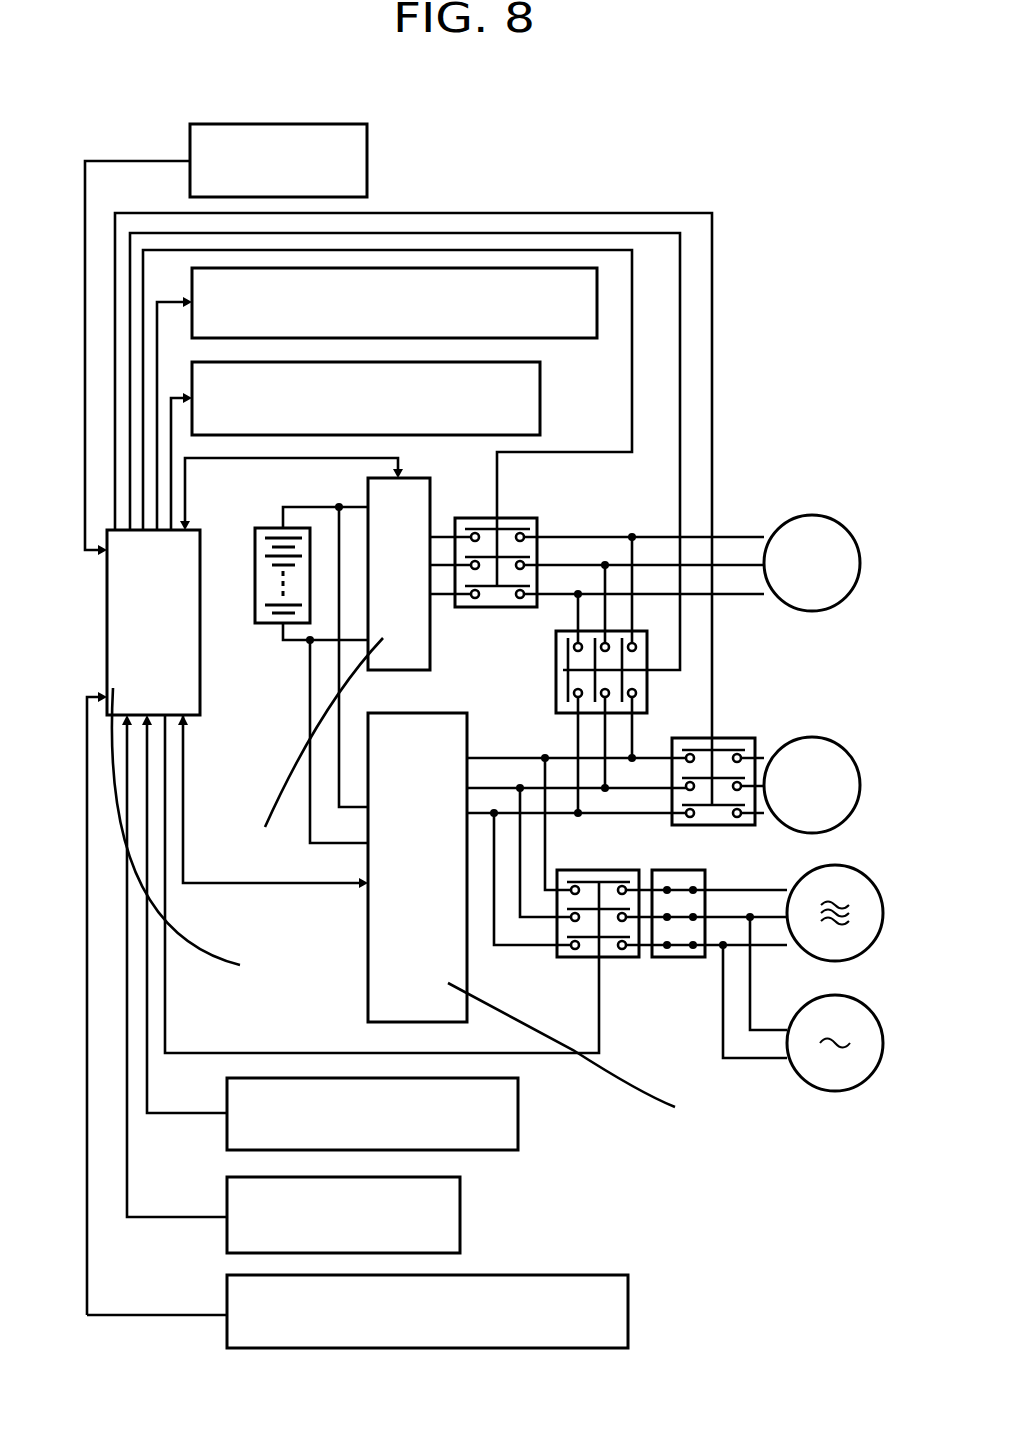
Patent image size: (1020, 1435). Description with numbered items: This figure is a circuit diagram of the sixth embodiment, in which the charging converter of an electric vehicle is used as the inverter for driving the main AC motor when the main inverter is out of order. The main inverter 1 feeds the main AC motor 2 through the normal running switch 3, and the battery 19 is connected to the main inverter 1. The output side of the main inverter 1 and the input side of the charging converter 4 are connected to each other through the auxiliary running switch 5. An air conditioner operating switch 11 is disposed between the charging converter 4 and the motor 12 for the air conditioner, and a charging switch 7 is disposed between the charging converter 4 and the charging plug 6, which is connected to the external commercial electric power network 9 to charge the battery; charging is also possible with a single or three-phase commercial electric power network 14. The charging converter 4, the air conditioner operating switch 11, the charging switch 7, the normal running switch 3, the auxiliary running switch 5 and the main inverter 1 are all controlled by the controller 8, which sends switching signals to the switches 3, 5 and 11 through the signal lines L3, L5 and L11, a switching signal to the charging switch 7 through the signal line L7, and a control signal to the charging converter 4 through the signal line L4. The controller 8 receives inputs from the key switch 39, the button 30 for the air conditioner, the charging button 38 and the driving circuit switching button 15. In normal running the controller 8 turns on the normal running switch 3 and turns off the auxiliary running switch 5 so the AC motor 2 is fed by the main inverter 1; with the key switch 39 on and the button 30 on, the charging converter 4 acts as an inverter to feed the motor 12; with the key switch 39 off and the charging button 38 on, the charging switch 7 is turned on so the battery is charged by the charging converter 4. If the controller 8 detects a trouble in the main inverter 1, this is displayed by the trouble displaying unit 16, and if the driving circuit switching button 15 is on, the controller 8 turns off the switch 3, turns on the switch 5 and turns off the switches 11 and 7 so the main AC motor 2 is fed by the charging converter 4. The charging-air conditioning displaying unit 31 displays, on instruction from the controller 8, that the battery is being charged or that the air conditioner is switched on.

The key switch 39 is at (367, 145).
The trouble displaying unit 16 is at (582, 338).
The charging-air conditioning displaying unit 31 is at (540, 412).
The signal line L5 is at (682, 383).
The signal line L11 is at (713, 435).
The signal line L3 is at (632, 452).
The signal line L4 is at (273, 884).
The signal line L7 is at (599, 1032).
The controller 8 is at (200, 715).
The main inverter 1 is at (430, 503).
The battery 19 is at (256, 606).
The charging converter 4 is at (467, 722).
The normal running switch 3 is at (525, 518).
The auxiliary running switch 5 is at (556, 650).
The main AC motor 2 is at (840, 521).
The air conditioner operating switch 11 is at (736, 738).
The motor for the air conditioner 12 is at (825, 737).
The charging switch 7 is at (607, 870).
The charging plug 6 is at (700, 870).
The external commercial electric power network 9 is at (845, 866).
The commercial electric power network 14 is at (858, 1000).
The button for the air conditioner 30 is at (518, 1090).
The charging button 38 is at (460, 1192).
The driving circuit switching button 15 is at (628, 1290).